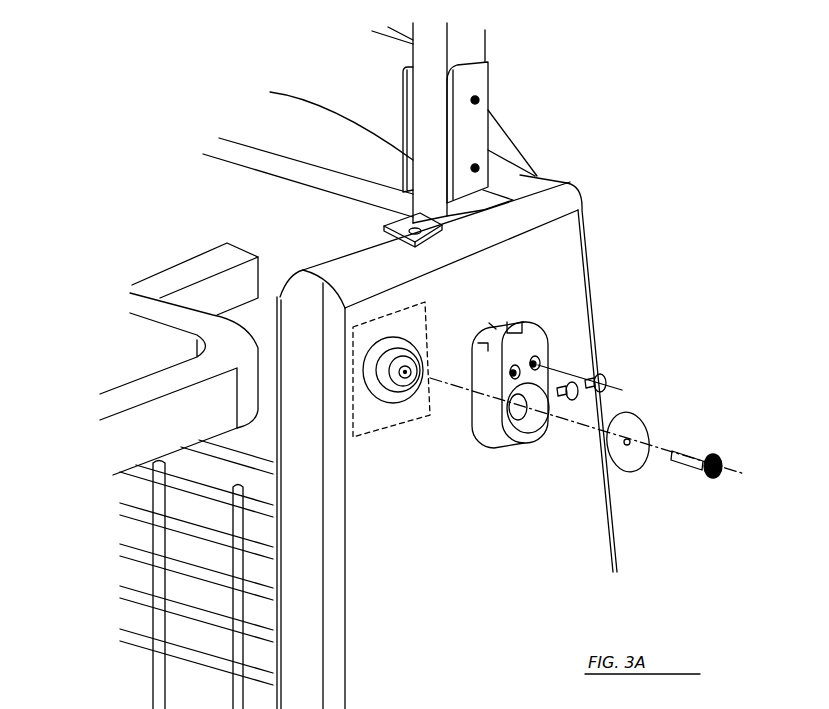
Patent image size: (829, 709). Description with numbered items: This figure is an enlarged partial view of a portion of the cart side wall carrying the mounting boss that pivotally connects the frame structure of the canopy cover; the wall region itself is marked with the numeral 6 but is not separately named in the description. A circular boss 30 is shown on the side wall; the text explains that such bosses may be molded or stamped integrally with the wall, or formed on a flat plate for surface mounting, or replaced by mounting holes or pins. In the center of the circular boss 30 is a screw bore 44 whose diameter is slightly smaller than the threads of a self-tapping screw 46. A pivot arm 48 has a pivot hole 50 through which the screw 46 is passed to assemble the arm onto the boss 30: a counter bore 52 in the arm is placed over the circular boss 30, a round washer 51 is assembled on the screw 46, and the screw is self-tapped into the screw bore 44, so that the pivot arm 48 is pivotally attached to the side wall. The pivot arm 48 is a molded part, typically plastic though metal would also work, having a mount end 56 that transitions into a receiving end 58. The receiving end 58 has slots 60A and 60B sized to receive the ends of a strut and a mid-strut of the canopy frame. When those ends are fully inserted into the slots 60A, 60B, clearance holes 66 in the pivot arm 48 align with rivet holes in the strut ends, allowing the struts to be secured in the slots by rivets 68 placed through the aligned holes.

The housing 6 is at (372, 532).
The circular boss 30 is at (385, 405).
The screw bore 44 is at (422, 402).
The self-tapping screw 46 is at (706, 478).
The pivot arm 48 is at (523, 345).
The pivot hole 50 is at (533, 437).
The round washer 51 is at (650, 432).
The counter bore 52 is at (523, 447).
The mount end 56 is at (492, 432).
The receiving end 58 is at (511, 320).
The slot 60A is at (488, 345).
The slot 60B is at (492, 325).
The clearance holes 66 is at (474, 362).
The rivets 68 is at (572, 382).